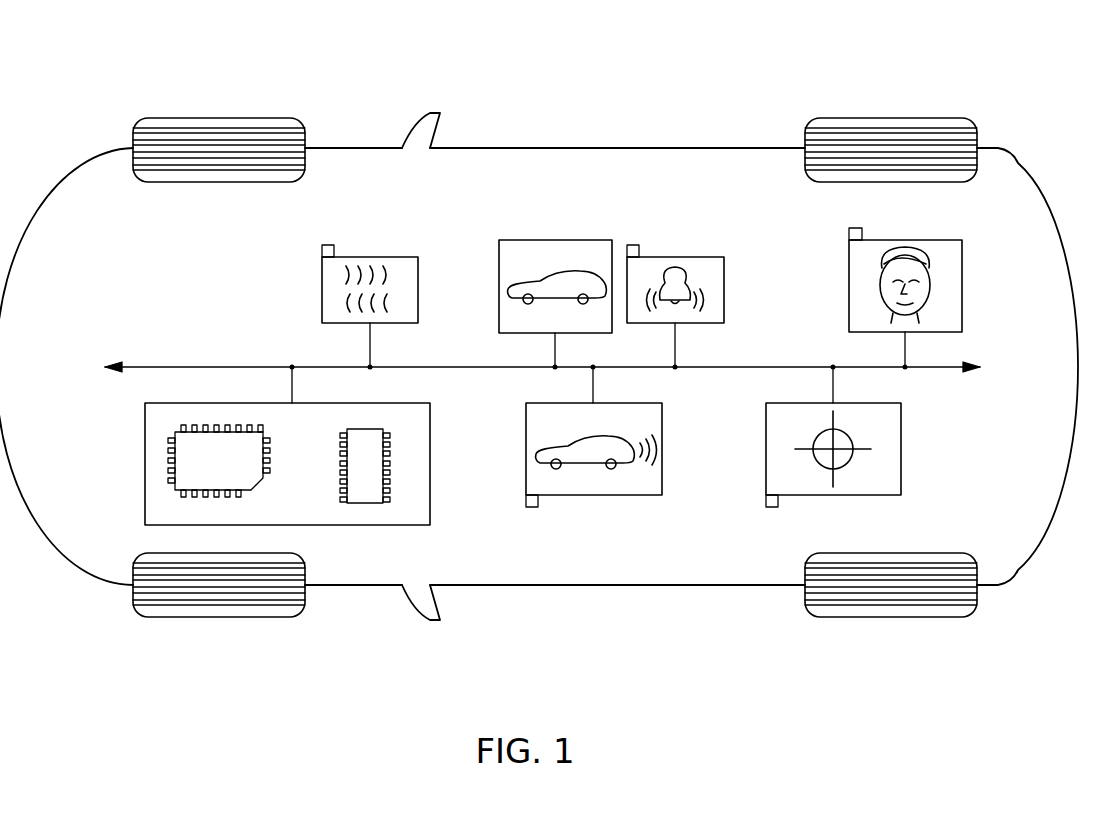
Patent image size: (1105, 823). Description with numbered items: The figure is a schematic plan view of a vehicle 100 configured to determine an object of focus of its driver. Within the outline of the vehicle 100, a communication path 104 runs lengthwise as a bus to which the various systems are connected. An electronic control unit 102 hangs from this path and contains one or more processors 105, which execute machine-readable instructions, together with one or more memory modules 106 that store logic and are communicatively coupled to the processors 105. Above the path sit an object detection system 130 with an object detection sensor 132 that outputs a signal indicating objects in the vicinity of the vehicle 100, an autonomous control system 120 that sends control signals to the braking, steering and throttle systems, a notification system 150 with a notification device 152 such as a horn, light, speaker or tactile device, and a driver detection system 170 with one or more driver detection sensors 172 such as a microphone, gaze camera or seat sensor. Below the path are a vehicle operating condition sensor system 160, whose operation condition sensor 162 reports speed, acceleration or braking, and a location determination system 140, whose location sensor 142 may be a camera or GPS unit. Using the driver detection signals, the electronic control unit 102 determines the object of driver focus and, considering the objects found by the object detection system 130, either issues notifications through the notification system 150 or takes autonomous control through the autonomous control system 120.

The vehicle 100 is at (539, 319).
The electronic control unit 102 is at (323, 463).
The communication path 104 is at (181, 367).
The processor 105 is at (258, 487).
The memory module 106 is at (340, 433).
The autonomous control system 120 is at (552, 240).
The object detection system 130 is at (391, 257).
The object detection sensor 132 is at (325, 245).
The location determination system 140 is at (857, 483).
The location sensor 142 is at (772, 509).
The notification system 150 is at (696, 256).
The notification device 152 is at (632, 245).
The vehicle operating condition sensor system 160 is at (615, 483).
The operation condition sensor 162 is at (532, 509).
The driver detection system 170 is at (940, 264).
The driver detection sensor 172 is at (855, 228).